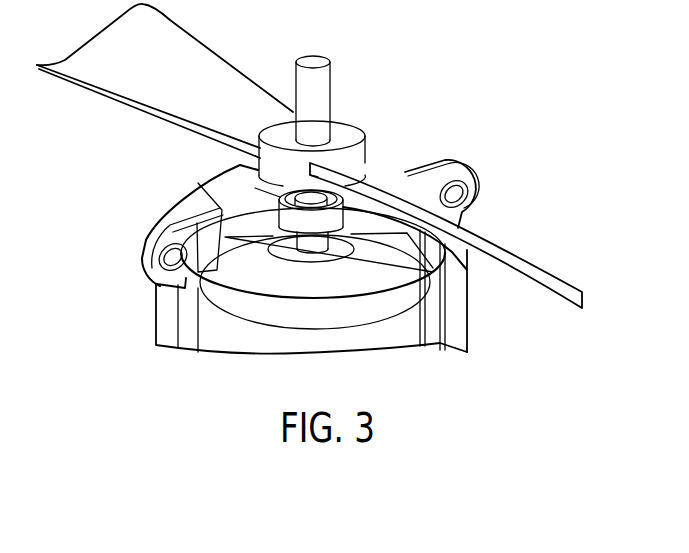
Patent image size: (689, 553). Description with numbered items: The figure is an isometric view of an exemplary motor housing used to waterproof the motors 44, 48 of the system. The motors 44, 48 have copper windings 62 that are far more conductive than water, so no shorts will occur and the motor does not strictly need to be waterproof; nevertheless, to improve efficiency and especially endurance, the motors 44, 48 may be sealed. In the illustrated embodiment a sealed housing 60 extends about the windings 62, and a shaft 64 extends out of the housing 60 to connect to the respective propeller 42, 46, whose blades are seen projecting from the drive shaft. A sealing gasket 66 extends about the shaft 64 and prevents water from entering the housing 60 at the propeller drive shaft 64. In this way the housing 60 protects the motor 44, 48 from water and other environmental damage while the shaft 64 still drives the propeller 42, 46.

The propeller 42 is at (446, 235).
The propeller 46 is at (532, 273).
The motor 44 is at (254, 81).
The motor 48 is at (404, 146).
The housing 60 is at (174, 199).
The copper windings 62 is at (382, 316).
The shaft 64 is at (318, 86).
The sealing gasket 66 is at (250, 180).